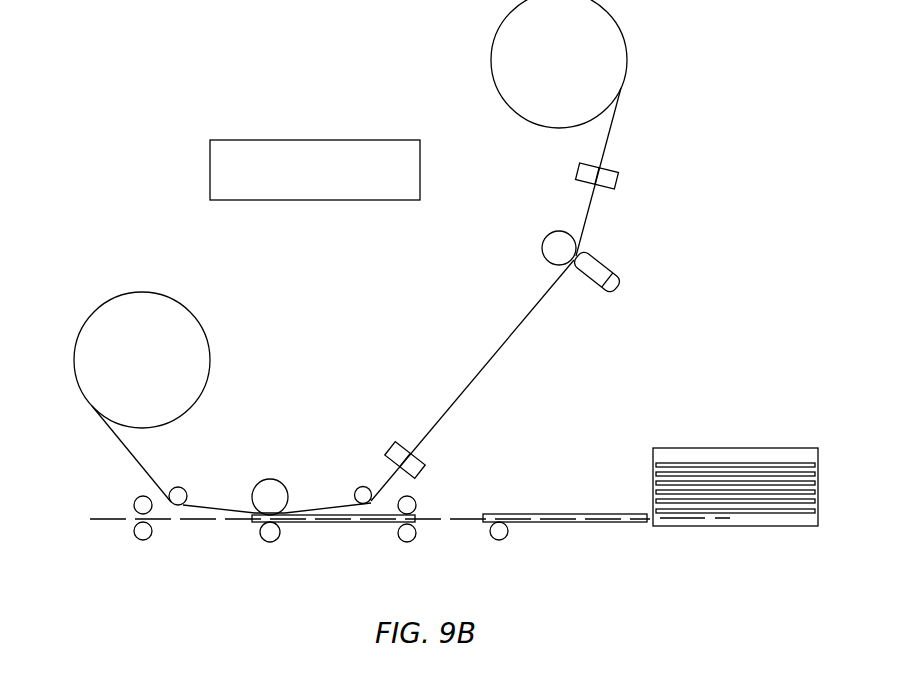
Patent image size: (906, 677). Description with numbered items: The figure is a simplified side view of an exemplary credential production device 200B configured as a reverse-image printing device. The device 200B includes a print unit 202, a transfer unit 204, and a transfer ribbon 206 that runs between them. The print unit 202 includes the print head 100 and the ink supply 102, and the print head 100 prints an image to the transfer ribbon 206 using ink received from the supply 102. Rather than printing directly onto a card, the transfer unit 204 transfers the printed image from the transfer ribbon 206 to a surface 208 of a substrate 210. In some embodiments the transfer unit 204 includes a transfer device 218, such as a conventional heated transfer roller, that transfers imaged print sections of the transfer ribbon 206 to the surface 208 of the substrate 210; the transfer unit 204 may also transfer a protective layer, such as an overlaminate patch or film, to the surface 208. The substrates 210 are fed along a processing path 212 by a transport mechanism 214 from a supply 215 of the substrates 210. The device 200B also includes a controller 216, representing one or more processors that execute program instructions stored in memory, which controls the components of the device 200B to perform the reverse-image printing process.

The credential production device 200B is at (192, 70).
The controller 216 is at (244, 138).
The print unit 202 is at (690, 326).
The print head 100 is at (590, 284).
The ink supply 102 is at (619, 292).
The transfer ribbon 206 is at (457, 397).
The transfer unit 204 is at (276, 437).
The transfer device 218 is at (268, 489).
The processing path 212 is at (102, 522).
The surface 208 is at (385, 511).
The substrate 210 is at (327, 523).
The transport mechanism 214 is at (537, 548).
The supply 215 is at (778, 446).